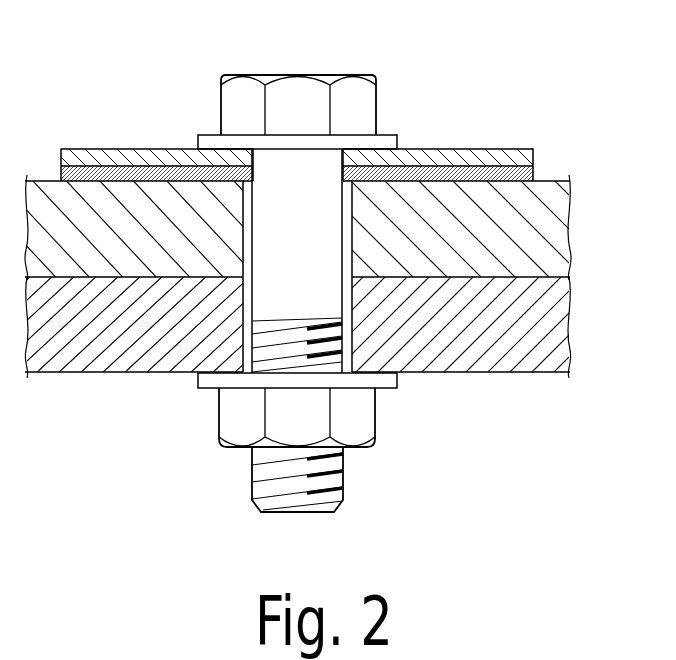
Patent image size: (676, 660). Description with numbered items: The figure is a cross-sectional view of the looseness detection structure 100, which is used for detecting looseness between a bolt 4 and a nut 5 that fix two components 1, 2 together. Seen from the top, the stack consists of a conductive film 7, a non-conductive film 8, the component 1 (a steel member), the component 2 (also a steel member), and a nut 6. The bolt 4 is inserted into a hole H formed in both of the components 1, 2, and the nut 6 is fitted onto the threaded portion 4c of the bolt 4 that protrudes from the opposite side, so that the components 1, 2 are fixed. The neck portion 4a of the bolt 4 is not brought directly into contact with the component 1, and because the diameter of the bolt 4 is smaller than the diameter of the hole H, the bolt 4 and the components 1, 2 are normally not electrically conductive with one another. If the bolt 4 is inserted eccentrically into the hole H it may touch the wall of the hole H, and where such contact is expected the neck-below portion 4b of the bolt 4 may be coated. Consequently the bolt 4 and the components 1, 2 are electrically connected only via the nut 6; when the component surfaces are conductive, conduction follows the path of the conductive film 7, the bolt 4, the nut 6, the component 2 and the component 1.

The looseness detection structure 100 is at (124, 121).
The component (steel member) 1 is at (560, 227).
The component (steel member) 2 is at (562, 328).
The bolt 4 is at (302, 87).
The neck portion 4a is at (376, 120).
The neck-below portion 4b is at (247, 237).
The threaded portion 4c is at (343, 473).
The nut 5 is at (212, 137).
The nut 6 is at (363, 415).
The conductive film 7 is at (513, 150).
The non-conductive film 8 is at (533, 172).
The hole H is at (350, 203).